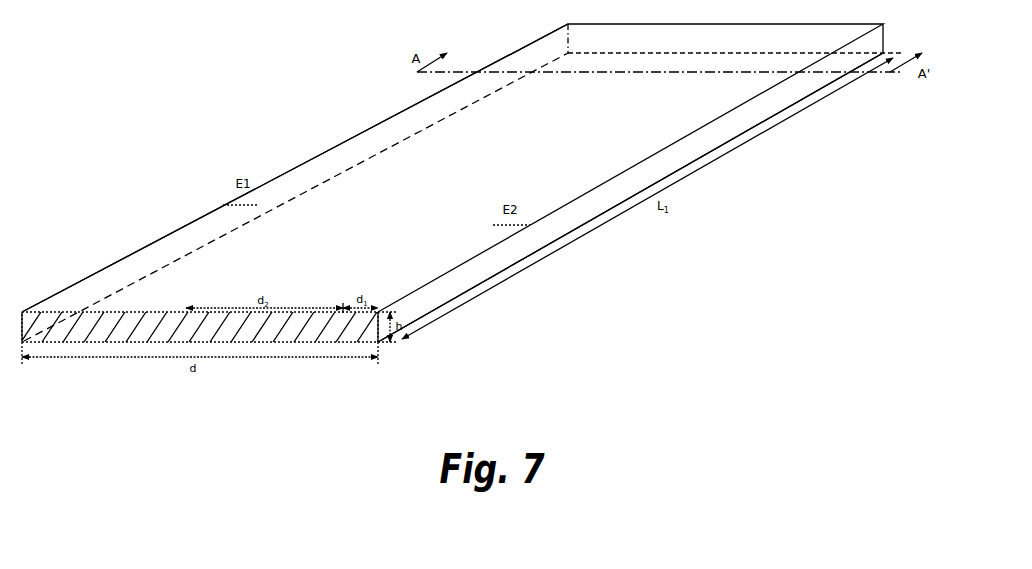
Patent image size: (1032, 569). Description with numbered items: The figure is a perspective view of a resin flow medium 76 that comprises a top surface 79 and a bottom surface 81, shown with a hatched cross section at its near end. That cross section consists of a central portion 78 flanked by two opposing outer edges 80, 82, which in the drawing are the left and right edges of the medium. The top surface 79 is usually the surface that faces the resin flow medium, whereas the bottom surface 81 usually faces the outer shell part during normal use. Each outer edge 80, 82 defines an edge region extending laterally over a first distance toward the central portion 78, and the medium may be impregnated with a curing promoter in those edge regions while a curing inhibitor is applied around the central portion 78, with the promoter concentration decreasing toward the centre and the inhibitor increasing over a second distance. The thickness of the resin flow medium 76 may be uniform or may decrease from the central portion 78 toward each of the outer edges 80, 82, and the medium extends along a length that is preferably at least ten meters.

The resin flow medium 76 is at (323, 68).
The central portion 78 is at (186, 312).
The top surface 79 is at (410, 163).
The outer edge 80 is at (22, 312).
The bottom surface 81 is at (480, 312).
The outer edge 82 is at (378, 312).